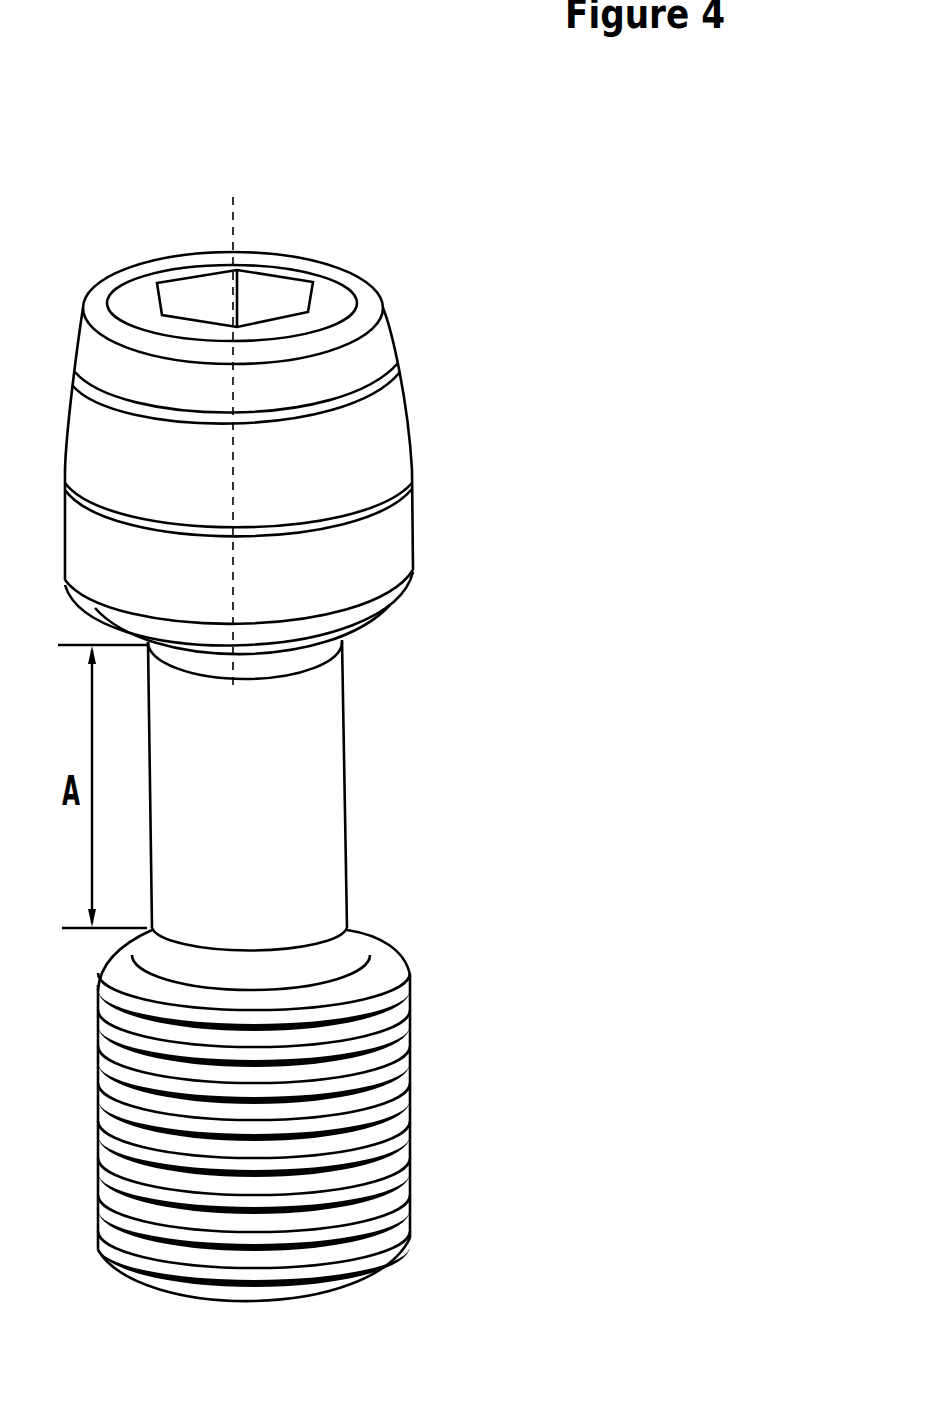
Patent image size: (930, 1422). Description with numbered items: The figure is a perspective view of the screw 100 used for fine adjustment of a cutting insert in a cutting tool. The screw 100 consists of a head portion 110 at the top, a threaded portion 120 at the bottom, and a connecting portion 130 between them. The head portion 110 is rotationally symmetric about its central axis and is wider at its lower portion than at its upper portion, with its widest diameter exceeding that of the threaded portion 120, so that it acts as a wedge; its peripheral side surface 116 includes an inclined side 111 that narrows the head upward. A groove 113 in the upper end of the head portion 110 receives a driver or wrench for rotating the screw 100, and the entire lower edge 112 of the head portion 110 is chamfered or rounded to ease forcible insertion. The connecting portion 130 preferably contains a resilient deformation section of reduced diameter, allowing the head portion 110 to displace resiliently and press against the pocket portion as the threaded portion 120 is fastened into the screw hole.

The screw 100 is at (359, 717).
The head portion 110 is at (359, 405).
The inclined side 111 is at (408, 421).
The lower edge 112 is at (363, 610).
The groove 113 is at (213, 287).
The peripheral side surface 116 is at (442, 469).
The threaded portion 120 is at (393, 1082).
The connecting portion 130 is at (343, 800).